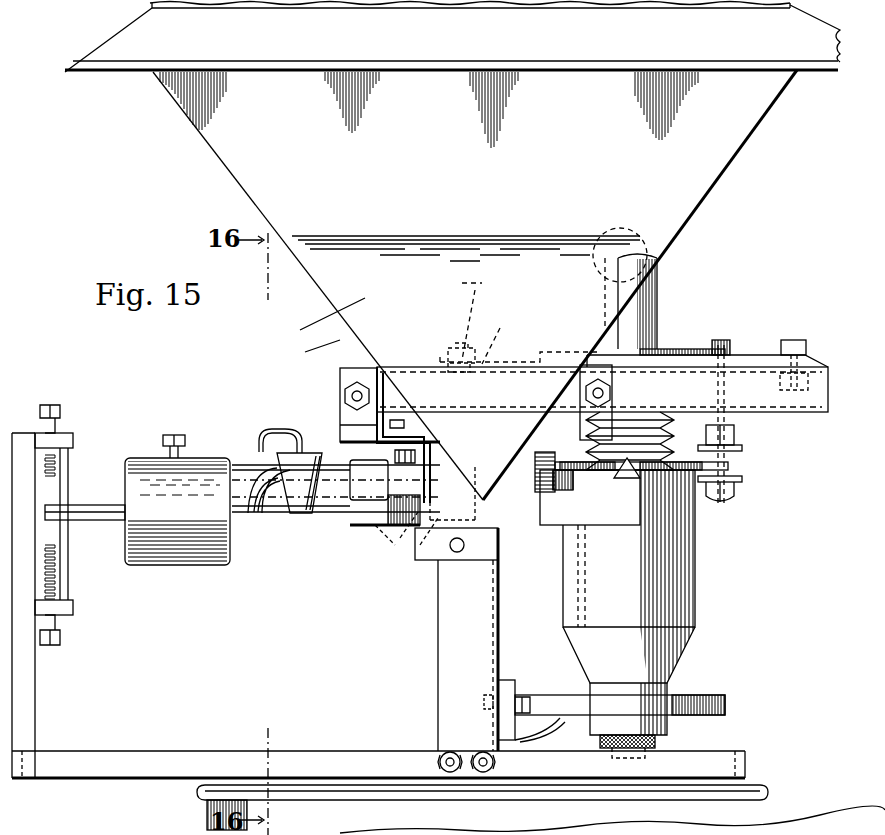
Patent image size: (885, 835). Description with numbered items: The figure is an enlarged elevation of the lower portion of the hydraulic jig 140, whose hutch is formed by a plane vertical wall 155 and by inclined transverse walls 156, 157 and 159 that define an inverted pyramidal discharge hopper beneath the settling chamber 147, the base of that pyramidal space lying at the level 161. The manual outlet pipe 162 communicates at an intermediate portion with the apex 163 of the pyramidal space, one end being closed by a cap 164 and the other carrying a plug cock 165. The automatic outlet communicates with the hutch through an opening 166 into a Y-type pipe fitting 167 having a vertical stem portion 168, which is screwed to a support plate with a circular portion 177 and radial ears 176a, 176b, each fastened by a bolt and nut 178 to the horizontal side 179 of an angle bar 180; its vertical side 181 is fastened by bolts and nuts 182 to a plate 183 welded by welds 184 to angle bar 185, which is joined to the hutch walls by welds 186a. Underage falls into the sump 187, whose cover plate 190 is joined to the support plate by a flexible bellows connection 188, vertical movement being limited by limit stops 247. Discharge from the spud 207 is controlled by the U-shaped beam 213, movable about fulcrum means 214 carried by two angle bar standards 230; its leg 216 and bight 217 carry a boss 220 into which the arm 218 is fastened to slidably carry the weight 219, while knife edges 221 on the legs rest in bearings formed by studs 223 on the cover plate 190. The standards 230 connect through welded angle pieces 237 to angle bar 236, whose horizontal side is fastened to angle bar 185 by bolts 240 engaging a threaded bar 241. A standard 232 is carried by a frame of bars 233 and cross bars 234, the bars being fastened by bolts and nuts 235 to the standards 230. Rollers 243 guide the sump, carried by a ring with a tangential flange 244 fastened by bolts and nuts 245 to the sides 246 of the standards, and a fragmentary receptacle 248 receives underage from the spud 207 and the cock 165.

The hydraulic jig 140 is at (198, 204).
The settling chamber 147 is at (198, 149).
The plane vertical wall 155 is at (707, 162).
The transverse wall 156 is at (345, 330).
The transverse wall 157 is at (658, 303).
The inclined wall 159 is at (365, 298).
The level 161 is at (415, 236).
The pipe 162 is at (400, 510).
The apex 163 is at (484, 490).
The cap 164 is at (548, 500).
The plug cock 165 is at (282, 455).
The opening 166 is at (640, 258).
The pipe fitting 167 is at (664, 320).
The stem portion 168 is at (660, 349).
The ear 176a is at (482, 350).
The ear 176b is at (812, 360).
The circular portion 177 is at (732, 372).
The bolt and nut 178 is at (797, 333).
The horizontal side 179 is at (742, 439).
The angle bar 180 is at (830, 418).
The vertical side 181 is at (785, 408).
The bolts and nuts 182 is at (334, 396).
The plate 183 is at (350, 420).
The welds 184 is at (372, 428).
The angle bar 185 is at (395, 392).
The welds 186a is at (375, 368).
The sump 187 is at (703, 580).
The flexible connection 188 is at (666, 433).
The cover plate 190 is at (700, 482).
The discharge spud 207 is at (660, 745).
The beam 213 is at (625, 546).
The fulcrum means 214 is at (411, 566).
The leg 216 is at (595, 528).
The bight 217 is at (356, 552).
The arm 218 is at (282, 508).
The weight 219 is at (170, 560).
The boss 220 is at (352, 527).
The knife edges 221 is at (630, 486).
The studs 223 is at (618, 475).
The standards 230 is at (428, 671).
The standard 232 is at (16, 700).
The bars 233 is at (305, 765).
The cross bars 234 is at (30, 750).
The bolts and nuts 235 is at (467, 753).
The angle bar 236 is at (458, 461).
The welded angle pieces 237 is at (400, 539).
The bolts 240 is at (400, 418).
The bar 241 is at (412, 420).
The rollers 243 is at (678, 698).
The tangential flange 244 is at (505, 690).
The bolts and nuts 245 is at (526, 695).
The sides 246 is at (492, 636).
The limit stops 247 is at (745, 500).
The receptacle 248 is at (758, 798).